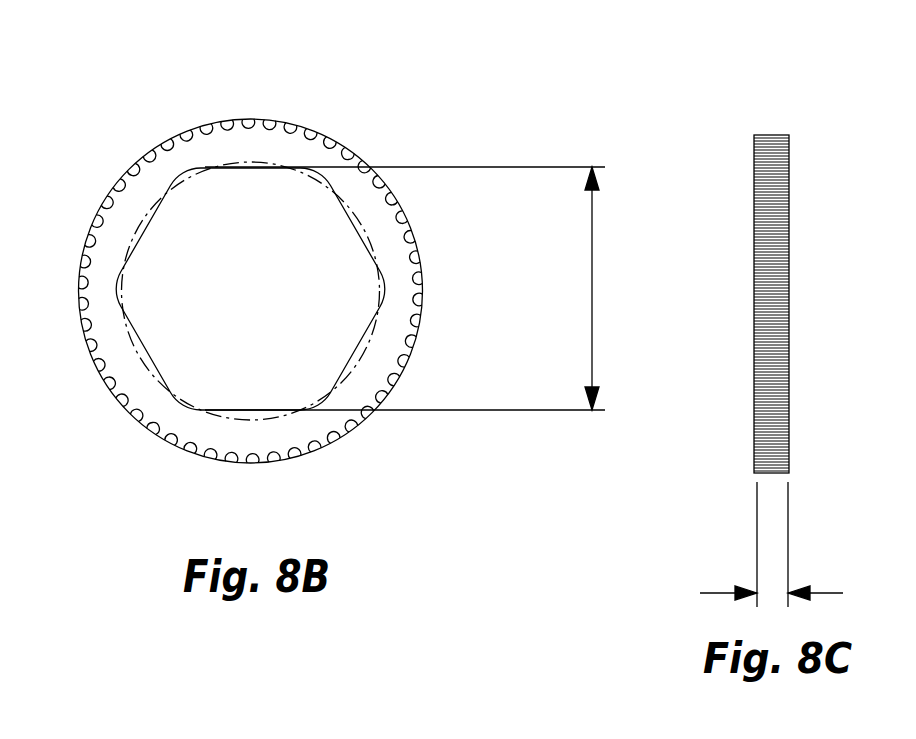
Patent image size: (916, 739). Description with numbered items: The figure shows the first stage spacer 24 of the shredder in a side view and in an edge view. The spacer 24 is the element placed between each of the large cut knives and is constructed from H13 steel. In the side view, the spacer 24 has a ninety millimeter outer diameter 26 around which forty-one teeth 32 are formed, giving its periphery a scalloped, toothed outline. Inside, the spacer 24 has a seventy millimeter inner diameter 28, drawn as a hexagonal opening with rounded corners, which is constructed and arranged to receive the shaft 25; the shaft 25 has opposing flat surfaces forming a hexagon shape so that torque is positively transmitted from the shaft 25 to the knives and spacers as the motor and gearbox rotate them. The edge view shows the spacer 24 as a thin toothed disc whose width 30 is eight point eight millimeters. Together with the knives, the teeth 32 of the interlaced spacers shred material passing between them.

In FIG. 8B, the spacer 24 is at (376, 265).
In FIG. 8C, the spacer 24 is at (808, 215).
In FIG. 8B, the shaft 25 is at (210, 376).
In FIG. 8B, the outer diameter 26 is at (183, 114).
In FIG. 8B, the inner diameter 28 is at (593, 274).
In FIG. 8C, the width 30 is at (717, 591).
In FIG. 8B, the teeth 32 is at (306, 118).